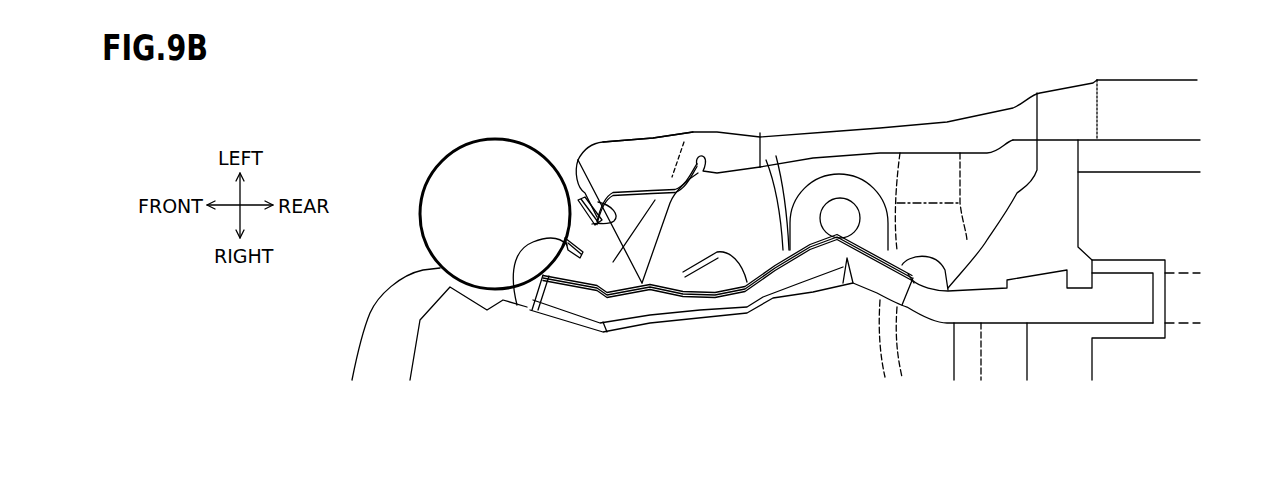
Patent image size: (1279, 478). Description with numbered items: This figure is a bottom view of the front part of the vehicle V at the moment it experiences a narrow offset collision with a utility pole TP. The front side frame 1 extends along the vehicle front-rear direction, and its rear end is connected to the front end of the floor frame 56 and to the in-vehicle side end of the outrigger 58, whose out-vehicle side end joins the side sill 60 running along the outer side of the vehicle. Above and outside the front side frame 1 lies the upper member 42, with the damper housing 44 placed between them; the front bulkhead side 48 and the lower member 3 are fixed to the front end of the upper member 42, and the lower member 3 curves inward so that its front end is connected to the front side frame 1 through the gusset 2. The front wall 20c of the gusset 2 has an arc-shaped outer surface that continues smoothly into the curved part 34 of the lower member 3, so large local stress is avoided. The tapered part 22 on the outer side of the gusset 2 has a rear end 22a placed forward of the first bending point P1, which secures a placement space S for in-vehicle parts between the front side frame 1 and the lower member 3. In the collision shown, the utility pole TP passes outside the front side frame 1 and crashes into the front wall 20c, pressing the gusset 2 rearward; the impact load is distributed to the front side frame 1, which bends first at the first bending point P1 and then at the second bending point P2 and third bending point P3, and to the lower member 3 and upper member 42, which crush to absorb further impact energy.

The utility pole TP is at (495, 137).
The front side frame 1 is at (652, 327).
The gusset 2 is at (597, 263).
The lower member 3 is at (733, 143).
The front wall 20c is at (514, 307).
The tapered part 22 is at (657, 195).
The rear end of tapered part 22a is at (705, 158).
The curved part 34 is at (580, 162).
The upper member 42 is at (892, 138).
The damper housing 44 is at (825, 190).
The front bulkhead side 48 is at (632, 198).
The floor frame 56 is at (1193, 273).
The outrigger 58 is at (1062, 218).
The side sill 60 is at (1145, 100).
The placement space S is at (702, 222).
The vehicle V is at (968, 103).
The first bending point P1 is at (723, 267).
The second bending point P2 is at (847, 257).
The third bending point P3 is at (875, 297).